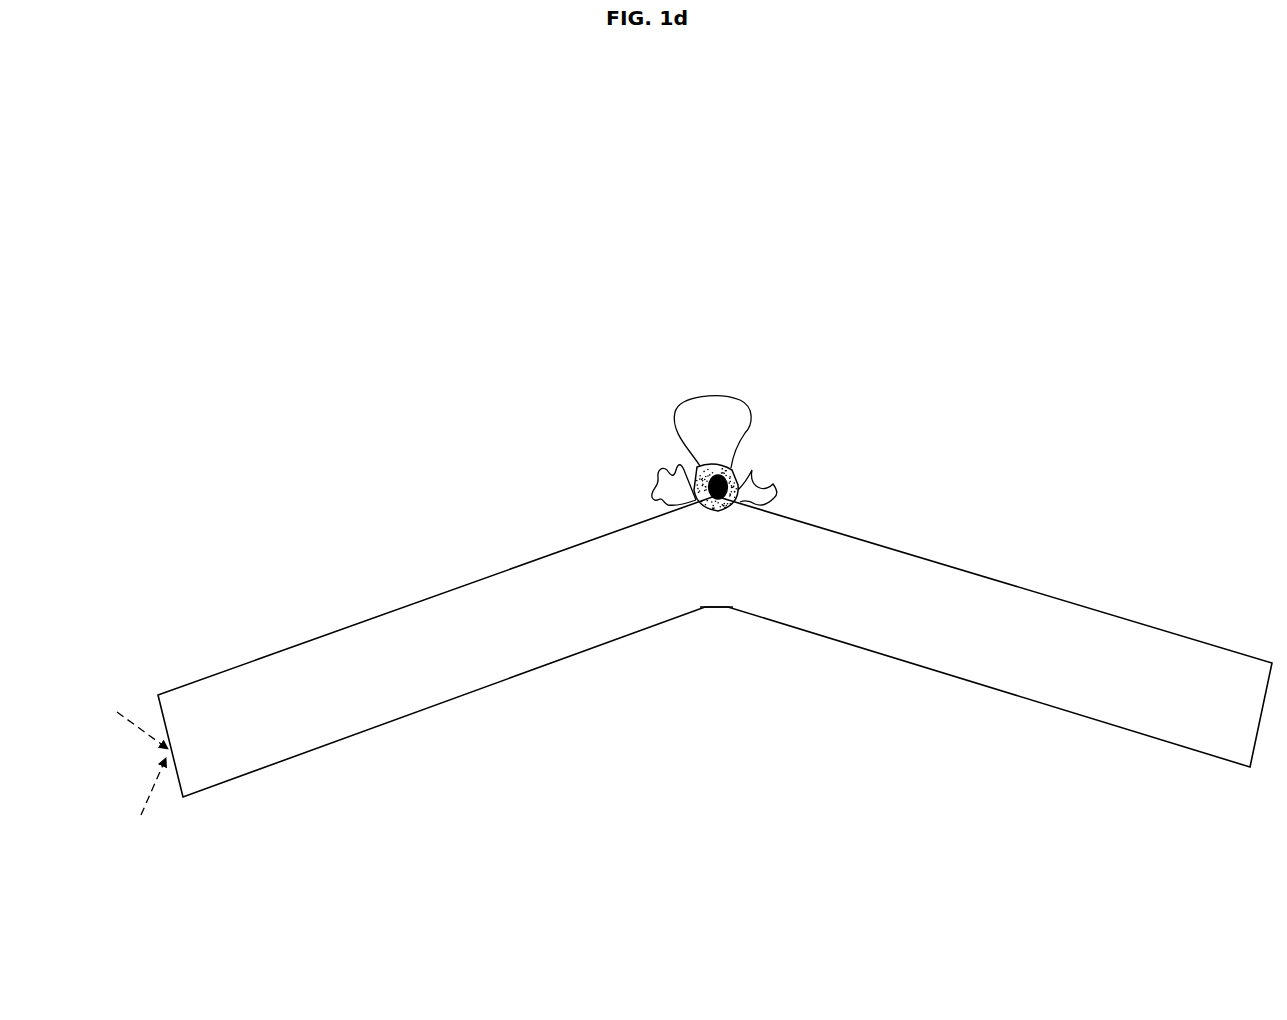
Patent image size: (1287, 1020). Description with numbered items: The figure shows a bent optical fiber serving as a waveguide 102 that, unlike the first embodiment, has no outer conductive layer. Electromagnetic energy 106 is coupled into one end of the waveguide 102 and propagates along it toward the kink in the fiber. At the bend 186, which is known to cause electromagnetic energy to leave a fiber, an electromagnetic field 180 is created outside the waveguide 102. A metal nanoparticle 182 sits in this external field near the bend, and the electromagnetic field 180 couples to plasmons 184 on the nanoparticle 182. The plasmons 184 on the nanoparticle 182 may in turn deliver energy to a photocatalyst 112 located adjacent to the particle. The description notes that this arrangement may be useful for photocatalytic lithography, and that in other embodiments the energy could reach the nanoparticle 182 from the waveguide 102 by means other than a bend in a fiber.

The waveguide 102 is at (963, 568).
The electromagnetic energy 106 is at (149, 793).
The photocatalyst 112 is at (755, 421).
The electromagnetic field 180 is at (771, 497).
The metal nanoparticle 182 is at (700, 467).
The plasmons 184 is at (733, 480).
The bend 186 is at (708, 608).